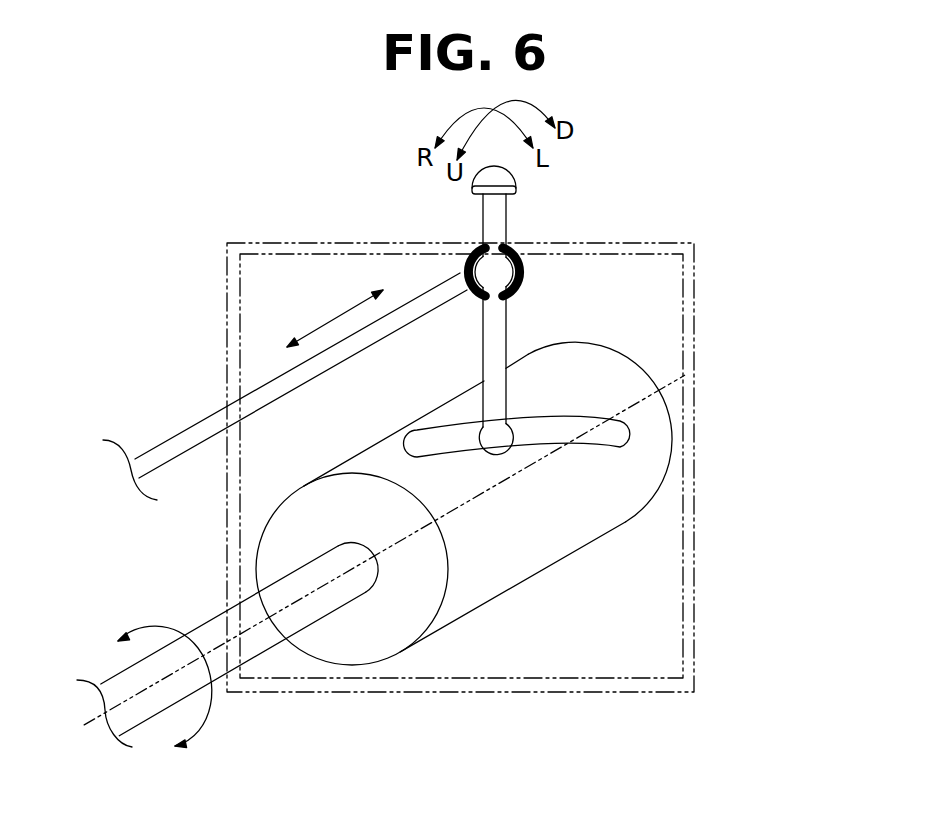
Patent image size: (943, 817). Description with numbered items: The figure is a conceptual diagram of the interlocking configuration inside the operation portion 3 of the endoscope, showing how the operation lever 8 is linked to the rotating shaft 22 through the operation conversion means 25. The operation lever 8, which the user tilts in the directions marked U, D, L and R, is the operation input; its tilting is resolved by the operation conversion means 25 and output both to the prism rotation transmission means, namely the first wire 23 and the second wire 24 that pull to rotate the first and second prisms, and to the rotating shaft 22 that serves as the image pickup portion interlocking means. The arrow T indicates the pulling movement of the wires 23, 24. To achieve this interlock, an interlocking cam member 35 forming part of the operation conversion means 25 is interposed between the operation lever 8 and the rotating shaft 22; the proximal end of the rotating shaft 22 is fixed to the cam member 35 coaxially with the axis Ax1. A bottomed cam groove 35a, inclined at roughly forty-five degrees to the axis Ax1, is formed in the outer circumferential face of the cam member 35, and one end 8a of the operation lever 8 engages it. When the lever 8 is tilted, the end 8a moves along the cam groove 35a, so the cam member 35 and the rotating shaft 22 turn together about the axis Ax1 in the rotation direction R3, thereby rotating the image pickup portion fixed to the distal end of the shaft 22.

The operation portion 3 is at (695, 280).
The operation conversion means 25 is at (695, 318).
The operation lever 8 is at (500, 181).
The one end of the operation lever 8a is at (495, 437).
The rotating shaft 22 is at (208, 638).
The first wire 23 is at (383, 317).
The second wire 24 is at (348, 357).
The interlocking cam member 35 is at (560, 537).
The cam groove 35a is at (593, 433).
The axis Ax1 is at (358, 568).
The rotation direction R3 is at (207, 728).
The translation direction T is at (332, 322).